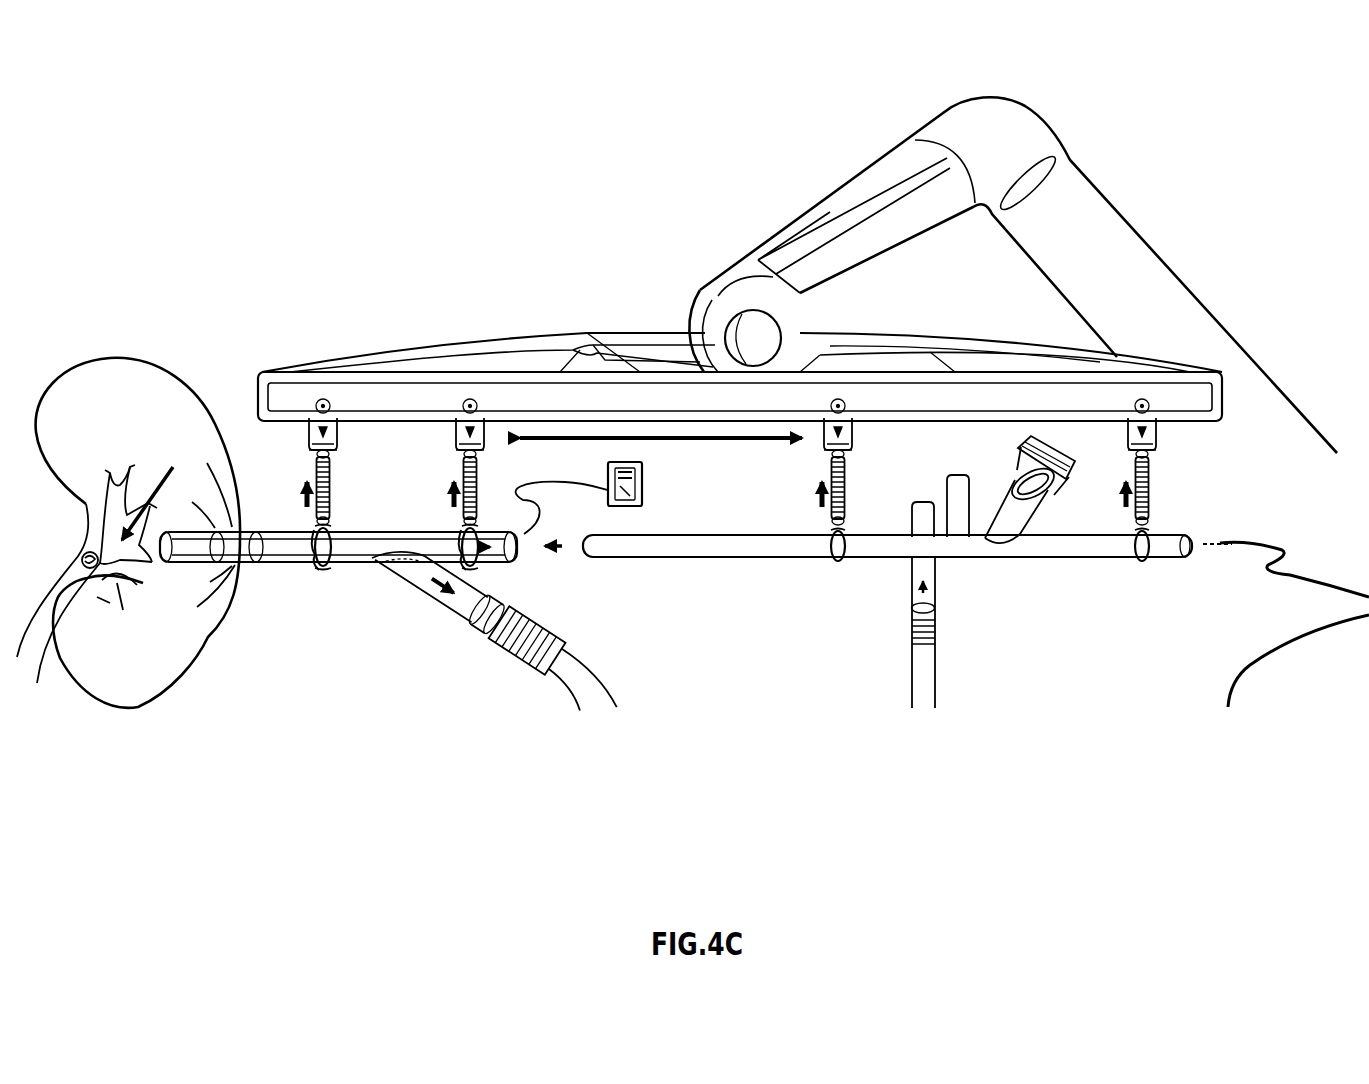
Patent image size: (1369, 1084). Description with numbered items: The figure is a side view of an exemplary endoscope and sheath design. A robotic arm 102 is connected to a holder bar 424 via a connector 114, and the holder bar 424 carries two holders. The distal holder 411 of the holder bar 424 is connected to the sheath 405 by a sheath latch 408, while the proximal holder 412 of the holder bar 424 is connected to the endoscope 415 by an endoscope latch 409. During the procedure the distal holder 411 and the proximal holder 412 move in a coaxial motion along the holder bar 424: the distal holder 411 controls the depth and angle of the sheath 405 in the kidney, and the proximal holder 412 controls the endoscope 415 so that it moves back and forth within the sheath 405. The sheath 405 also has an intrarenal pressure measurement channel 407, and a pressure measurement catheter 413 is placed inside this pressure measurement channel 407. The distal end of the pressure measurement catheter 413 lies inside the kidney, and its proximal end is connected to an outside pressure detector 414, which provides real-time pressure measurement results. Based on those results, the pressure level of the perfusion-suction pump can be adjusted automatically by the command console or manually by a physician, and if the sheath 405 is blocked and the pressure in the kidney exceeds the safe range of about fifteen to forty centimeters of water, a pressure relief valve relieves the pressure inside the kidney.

The robotic arm 102 is at (990, 166).
The connector 114 is at (597, 354).
The holder bar 424 is at (742, 404).
The distal holder 411 is at (462, 422).
The proximal holder 412 is at (845, 424).
The sheath 405 is at (267, 570).
The sheath latch 408 is at (476, 568).
The pressure measurement channel 407 is at (494, 566).
The pressure measurement catheter 413 is at (577, 494).
The pressure detector 414 is at (645, 509).
The endoscope 415 is at (972, 566).
The endoscope latch 409 is at (1139, 566).